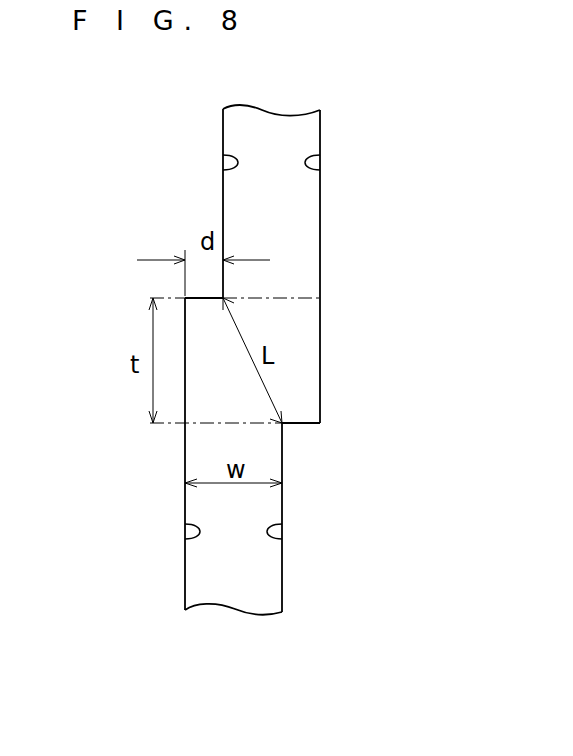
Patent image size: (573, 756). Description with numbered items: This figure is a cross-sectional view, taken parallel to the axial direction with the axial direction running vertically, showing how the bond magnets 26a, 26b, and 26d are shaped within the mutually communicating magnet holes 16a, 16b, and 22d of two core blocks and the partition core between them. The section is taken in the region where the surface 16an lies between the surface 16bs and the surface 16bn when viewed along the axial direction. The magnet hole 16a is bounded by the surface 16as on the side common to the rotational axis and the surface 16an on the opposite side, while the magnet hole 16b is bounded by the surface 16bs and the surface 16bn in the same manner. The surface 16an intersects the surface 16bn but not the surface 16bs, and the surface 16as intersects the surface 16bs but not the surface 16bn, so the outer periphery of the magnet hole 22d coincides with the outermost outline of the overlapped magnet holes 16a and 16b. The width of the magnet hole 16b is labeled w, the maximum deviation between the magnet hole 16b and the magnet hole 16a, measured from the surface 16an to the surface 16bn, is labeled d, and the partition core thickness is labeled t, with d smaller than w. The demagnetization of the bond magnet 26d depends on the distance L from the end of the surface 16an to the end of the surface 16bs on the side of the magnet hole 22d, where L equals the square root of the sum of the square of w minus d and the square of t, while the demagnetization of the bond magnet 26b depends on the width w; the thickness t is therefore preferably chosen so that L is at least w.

The magnet hole 16a is at (333, 258).
The magnet hole 16b is at (292, 568).
The surface 16an is at (223, 168).
The surface 16as is at (320, 167).
The surface 16bn is at (185, 538).
The surface 16bs is at (282, 538).
The magnet hole 22d is at (336, 328).
The bond magnet 26a is at (275, 127).
The bond magnet 26b is at (232, 595).
The bond magnet 26d is at (306, 401).